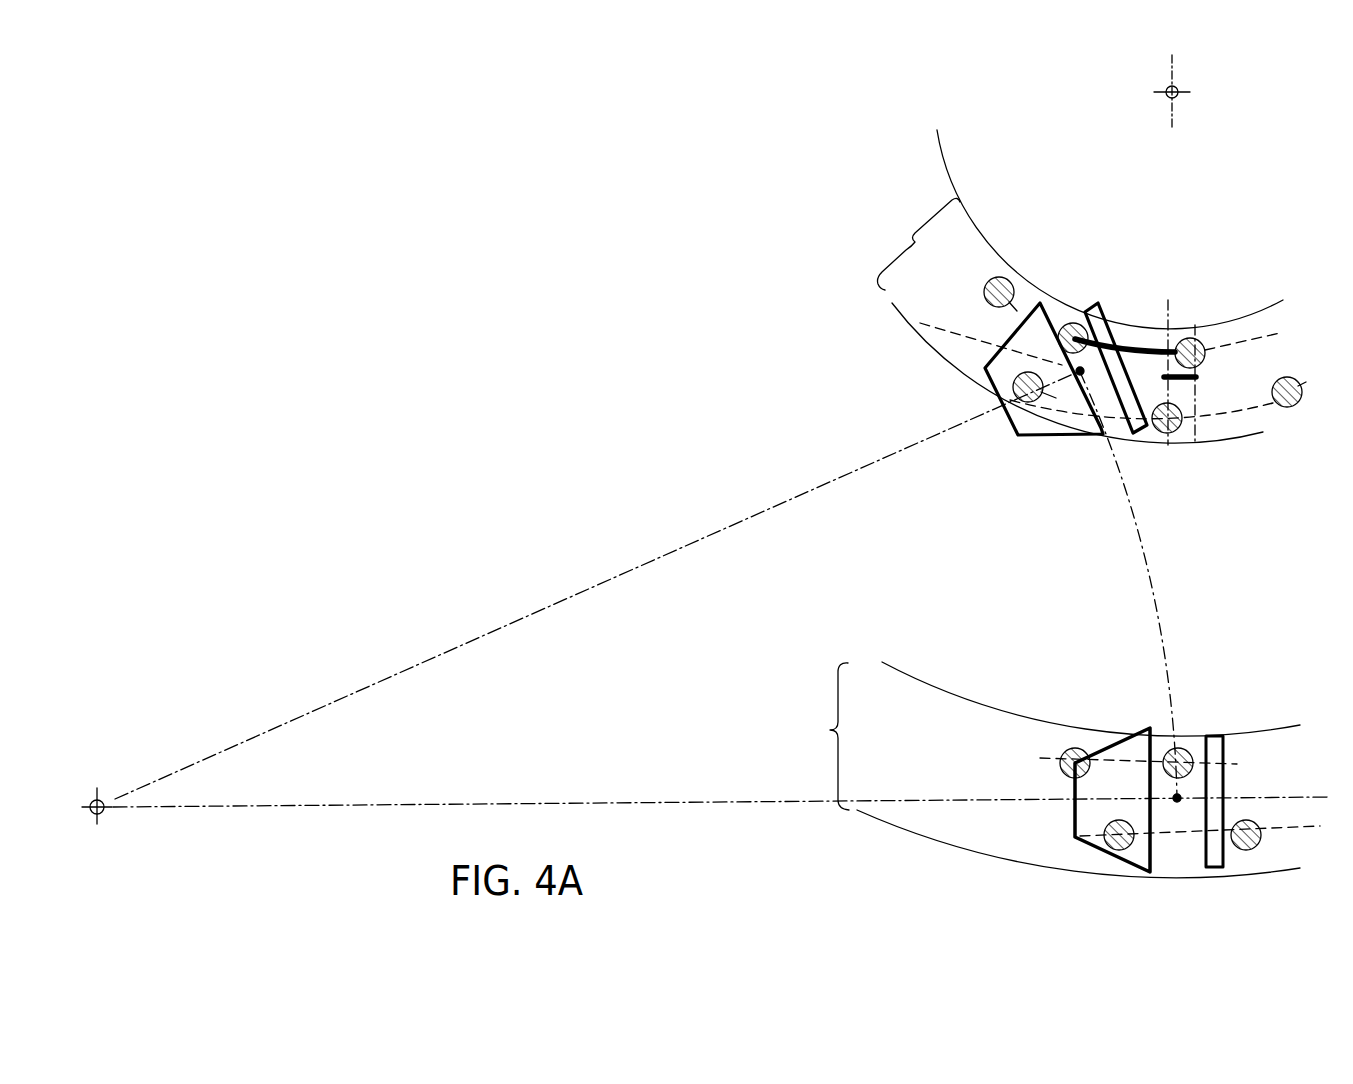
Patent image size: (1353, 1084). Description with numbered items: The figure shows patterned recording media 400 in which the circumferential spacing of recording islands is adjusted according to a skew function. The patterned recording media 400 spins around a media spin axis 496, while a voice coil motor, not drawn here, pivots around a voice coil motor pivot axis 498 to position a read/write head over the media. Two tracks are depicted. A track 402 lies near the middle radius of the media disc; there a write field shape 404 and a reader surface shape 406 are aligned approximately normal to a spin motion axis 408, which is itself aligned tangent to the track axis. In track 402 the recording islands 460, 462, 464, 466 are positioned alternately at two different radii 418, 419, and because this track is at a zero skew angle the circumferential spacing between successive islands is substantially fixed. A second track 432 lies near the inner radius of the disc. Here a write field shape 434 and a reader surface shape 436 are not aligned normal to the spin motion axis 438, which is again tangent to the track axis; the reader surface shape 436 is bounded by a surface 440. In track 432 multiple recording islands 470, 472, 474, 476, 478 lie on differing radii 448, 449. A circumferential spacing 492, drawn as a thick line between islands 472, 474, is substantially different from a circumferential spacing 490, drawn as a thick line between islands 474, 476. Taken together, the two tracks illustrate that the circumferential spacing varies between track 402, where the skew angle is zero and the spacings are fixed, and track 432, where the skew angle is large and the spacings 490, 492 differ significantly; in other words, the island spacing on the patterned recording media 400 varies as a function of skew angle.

The patterned recording media 400 is at (703, 362).
The track 402 is at (830, 730).
The write field shape 404 is at (1130, 863).
The reader surface shape 406 is at (1213, 868).
The spin motion axis 408 is at (737, 806).
The radius 418 is at (1240, 762).
The radius 419 is at (1262, 836).
The track 432 is at (915, 237).
The write field shape 434 is at (1027, 434).
The reader surface shape 436 is at (1093, 305).
The spin motion axis 438 is at (957, 337).
The plate element surface 440 is at (1133, 437).
The radius 448 is at (1267, 350).
The radius 449 is at (1225, 413).
The recording island 460 is at (1243, 820).
The recording island 462 is at (1182, 748).
The recording island 464 is at (1105, 842).
The recording island 466 is at (1063, 772).
The recording island 470 is at (1282, 408).
The recording island 472 is at (1198, 340).
The recording island 474 is at (1184, 420).
The recording island 476 is at (1070, 322).
The recording island 478 is at (1013, 386).
The circumferential spacing 490 is at (1132, 340).
The circumferential spacing 492 is at (1168, 300).
The media spin axis 496 is at (1166, 91).
The voice coil motor pivot axis 498 is at (94, 798).